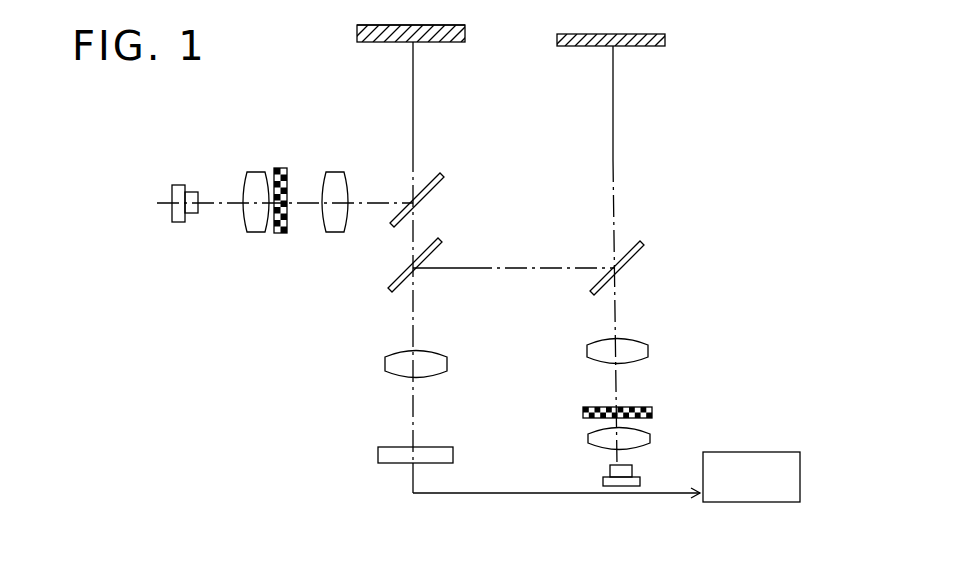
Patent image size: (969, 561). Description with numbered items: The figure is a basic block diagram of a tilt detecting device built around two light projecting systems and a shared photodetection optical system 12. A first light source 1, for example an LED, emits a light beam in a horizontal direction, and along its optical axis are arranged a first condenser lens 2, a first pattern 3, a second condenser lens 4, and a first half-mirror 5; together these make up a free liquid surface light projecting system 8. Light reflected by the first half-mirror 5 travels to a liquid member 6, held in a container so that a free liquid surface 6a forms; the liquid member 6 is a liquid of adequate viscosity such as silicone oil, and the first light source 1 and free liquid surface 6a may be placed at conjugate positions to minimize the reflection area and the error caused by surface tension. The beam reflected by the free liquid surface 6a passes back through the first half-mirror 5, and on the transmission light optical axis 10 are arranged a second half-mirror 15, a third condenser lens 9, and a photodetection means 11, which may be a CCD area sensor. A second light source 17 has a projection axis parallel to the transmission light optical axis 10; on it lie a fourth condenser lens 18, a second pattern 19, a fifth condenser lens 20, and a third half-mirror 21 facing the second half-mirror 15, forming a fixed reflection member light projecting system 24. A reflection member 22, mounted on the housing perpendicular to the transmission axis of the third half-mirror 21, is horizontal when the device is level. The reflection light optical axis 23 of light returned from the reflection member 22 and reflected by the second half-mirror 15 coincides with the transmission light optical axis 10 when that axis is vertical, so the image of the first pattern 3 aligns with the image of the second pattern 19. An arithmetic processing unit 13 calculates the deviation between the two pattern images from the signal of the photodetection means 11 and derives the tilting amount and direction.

The first light source 1 is at (173, 185).
The first condenser lens 2 is at (254, 172).
The first pattern 3 is at (282, 168).
The second condenser lens 4 is at (342, 172).
The first half-mirror 5 is at (444, 177).
The liquid member 6 is at (467, 29).
The free liquid surface 6a is at (358, 27).
The free liquid surface light projecting system 8 is at (305, 240).
The third condenser lens 9 is at (385, 366).
The transmission light optical axis 10 is at (413, 237).
The photodetection means 11 is at (378, 453).
The photodetection optical system 12 is at (323, 362).
The arithmetic processing unit 13 is at (721, 452).
The second half-mirror 15 is at (440, 243).
The second light source 17 is at (603, 479).
The fourth condenser lens 18 is at (588, 437).
The second pattern 19 is at (590, 407).
The fifth condenser lens 20 is at (648, 346).
The third half-mirror 21 is at (642, 247).
The reflection member 22 is at (648, 46).
The reflection light optical axis 23 is at (415, 300).
The fixed reflection member light projecting system 24 is at (690, 408).